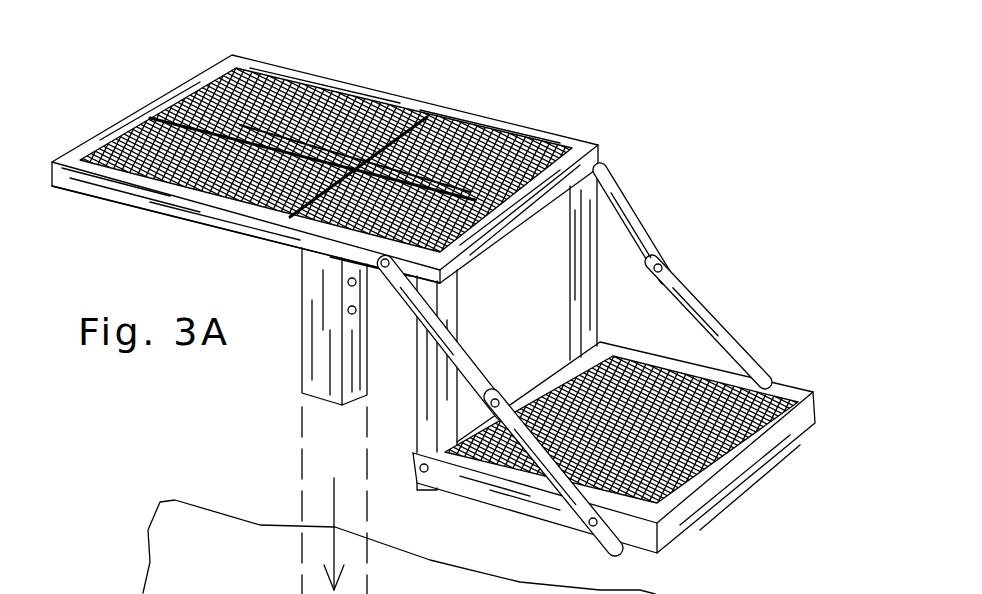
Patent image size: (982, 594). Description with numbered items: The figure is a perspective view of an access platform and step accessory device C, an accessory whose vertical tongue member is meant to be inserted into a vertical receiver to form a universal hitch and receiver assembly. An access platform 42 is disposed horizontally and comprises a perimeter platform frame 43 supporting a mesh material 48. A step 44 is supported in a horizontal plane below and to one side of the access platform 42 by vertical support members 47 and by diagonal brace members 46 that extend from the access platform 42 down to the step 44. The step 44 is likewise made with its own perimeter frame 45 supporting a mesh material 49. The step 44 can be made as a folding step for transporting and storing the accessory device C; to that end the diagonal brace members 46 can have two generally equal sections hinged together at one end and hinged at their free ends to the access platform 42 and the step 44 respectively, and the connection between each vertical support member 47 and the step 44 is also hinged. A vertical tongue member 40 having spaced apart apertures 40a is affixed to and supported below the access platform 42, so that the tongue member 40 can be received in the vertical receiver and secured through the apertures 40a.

The access platform and step accessory device C is at (632, 137).
The vertical tongue member 40 is at (308, 350).
The spaced apart apertures 40a is at (346, 310).
The access platform 42 is at (372, 81).
The perimeter platform frame 43 is at (158, 210).
The step 44 is at (758, 480).
The perimeter frame 45 is at (530, 510).
The diagonal brace members 46 is at (628, 213).
The vertical support members 47 is at (452, 305).
The mesh material 48 is at (477, 124).
The mesh material 49 is at (775, 388).